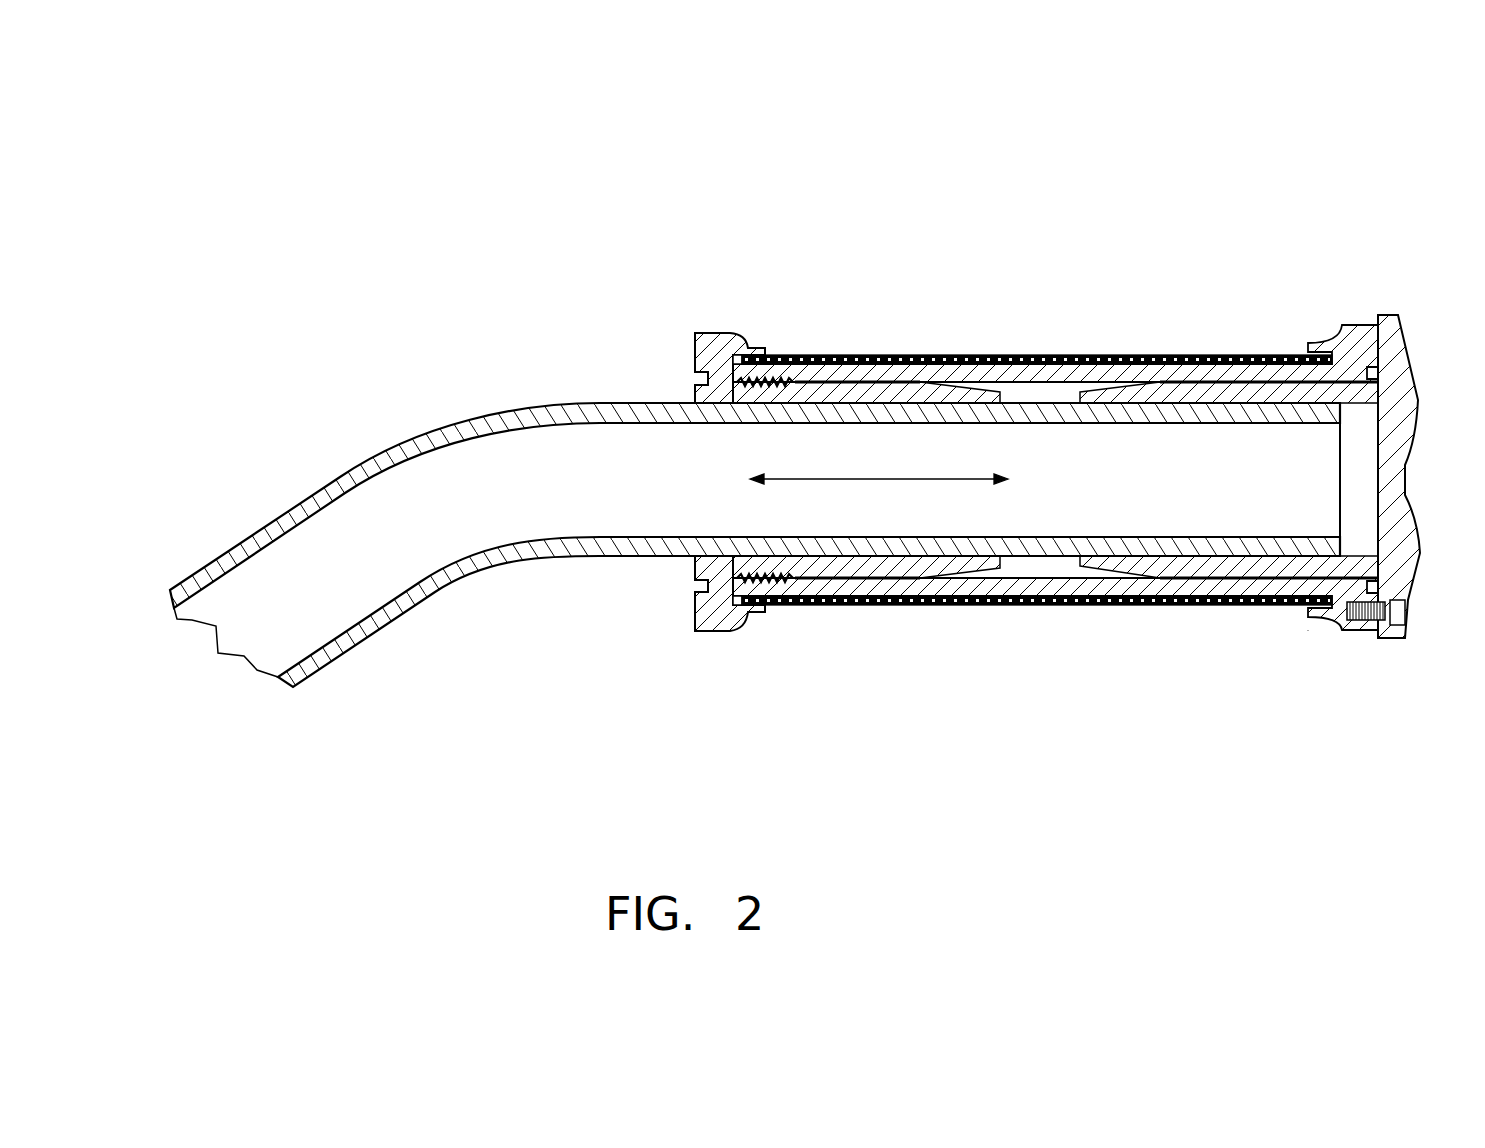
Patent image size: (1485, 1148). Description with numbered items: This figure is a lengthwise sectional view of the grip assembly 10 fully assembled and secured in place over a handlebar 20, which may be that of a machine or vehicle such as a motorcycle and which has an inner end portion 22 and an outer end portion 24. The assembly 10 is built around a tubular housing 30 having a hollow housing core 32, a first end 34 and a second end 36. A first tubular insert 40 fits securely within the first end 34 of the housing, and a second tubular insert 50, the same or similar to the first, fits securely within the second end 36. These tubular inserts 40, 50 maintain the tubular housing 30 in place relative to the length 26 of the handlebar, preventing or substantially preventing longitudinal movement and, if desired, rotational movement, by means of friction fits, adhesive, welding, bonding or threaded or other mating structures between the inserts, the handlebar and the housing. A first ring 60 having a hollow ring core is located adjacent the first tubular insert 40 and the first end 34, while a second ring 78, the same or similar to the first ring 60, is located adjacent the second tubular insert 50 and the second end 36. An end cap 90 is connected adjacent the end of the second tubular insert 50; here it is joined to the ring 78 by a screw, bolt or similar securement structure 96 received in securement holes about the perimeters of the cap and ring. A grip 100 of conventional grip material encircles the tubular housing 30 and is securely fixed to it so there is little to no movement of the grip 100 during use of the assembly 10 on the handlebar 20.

The grip assembly 10 is at (827, 417).
The handlebar 20 is at (377, 448).
The inner end portion 22 is at (988, 465).
The outer end portion 24 is at (1288, 636).
The length 26 is at (848, 480).
The tubular housing 30 is at (1109, 475).
The hollow housing core 32 is at (1040, 393).
The first end 34 is at (1033, 465).
The second end 36 is at (1410, 428).
The first tubular insert 40 is at (818, 570).
The second tubular insert 50 is at (1188, 568).
The first ring 60 is at (717, 331).
The second ring 78 is at (1353, 343).
The end cap 90 is at (1403, 358).
The securement structure 96 is at (1402, 610).
The grip 100 is at (1155, 355).